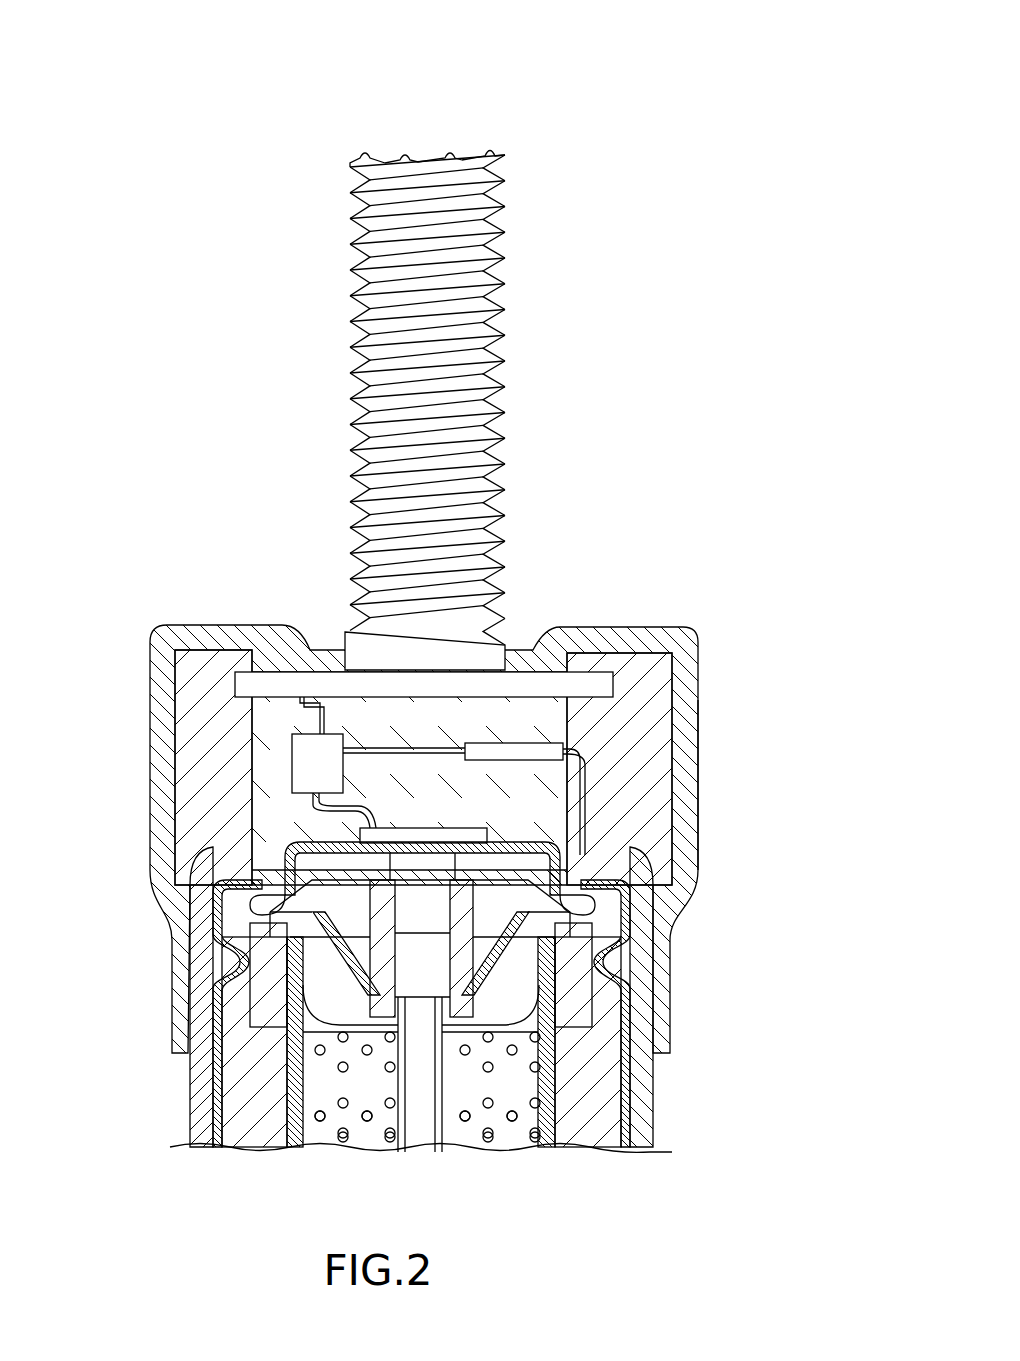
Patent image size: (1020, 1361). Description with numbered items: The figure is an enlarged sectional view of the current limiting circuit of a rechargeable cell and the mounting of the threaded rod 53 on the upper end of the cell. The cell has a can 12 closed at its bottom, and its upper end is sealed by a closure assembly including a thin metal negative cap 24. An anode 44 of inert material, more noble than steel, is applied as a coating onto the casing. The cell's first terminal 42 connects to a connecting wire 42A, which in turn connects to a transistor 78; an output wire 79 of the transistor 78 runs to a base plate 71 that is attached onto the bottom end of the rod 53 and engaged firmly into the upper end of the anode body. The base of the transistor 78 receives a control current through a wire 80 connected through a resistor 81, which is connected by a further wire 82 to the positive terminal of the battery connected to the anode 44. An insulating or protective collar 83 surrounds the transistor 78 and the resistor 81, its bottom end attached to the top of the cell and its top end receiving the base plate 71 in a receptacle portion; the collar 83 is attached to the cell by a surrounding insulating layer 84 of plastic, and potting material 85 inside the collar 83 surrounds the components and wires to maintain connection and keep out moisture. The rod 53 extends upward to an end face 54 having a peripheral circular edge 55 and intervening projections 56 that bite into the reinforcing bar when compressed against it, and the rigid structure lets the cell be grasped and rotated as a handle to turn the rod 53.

The can 12 is at (195, 1086).
The negative cap 24 is at (655, 900).
The first terminal 42 is at (470, 832).
The connecting wire 42A is at (350, 818).
The anode 44 is at (648, 1097).
The threaded rod 53 is at (465, 380).
The end face 54 is at (440, 185).
The peripheral circular edge 55 is at (358, 150).
The intervening projections 56 is at (452, 160).
The base plate 71 is at (335, 683).
The transistor 78 is at (305, 765).
The output wire 79 is at (300, 705).
The wire 80 is at (447, 745).
The resistor 81 is at (548, 745).
The wire 82 is at (600, 782).
The collar 83 is at (652, 675).
The insulating layer 84 is at (688, 780).
The potting material 85 is at (258, 828).